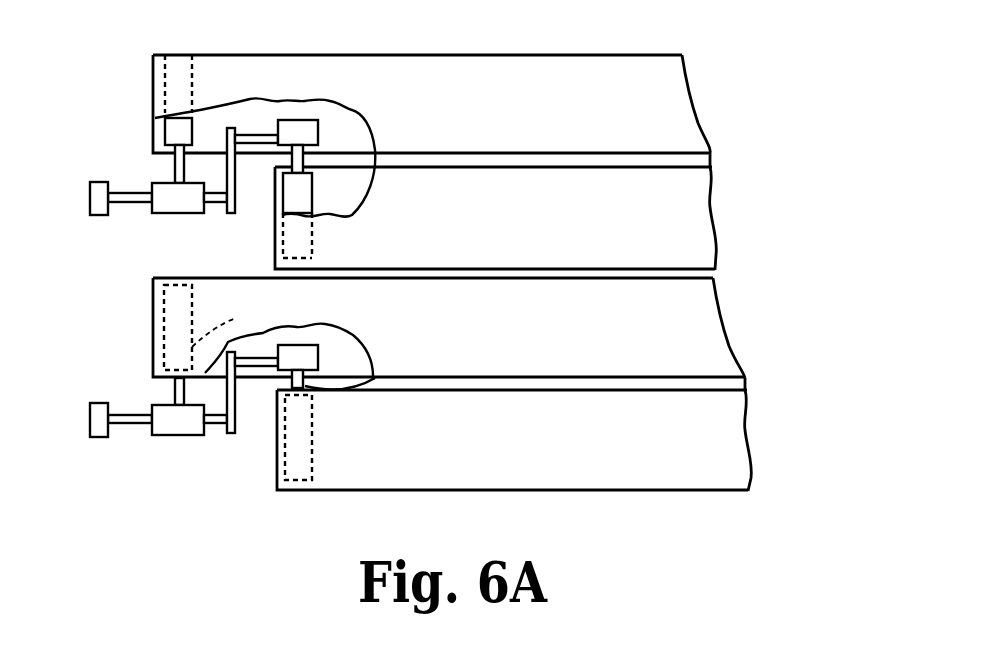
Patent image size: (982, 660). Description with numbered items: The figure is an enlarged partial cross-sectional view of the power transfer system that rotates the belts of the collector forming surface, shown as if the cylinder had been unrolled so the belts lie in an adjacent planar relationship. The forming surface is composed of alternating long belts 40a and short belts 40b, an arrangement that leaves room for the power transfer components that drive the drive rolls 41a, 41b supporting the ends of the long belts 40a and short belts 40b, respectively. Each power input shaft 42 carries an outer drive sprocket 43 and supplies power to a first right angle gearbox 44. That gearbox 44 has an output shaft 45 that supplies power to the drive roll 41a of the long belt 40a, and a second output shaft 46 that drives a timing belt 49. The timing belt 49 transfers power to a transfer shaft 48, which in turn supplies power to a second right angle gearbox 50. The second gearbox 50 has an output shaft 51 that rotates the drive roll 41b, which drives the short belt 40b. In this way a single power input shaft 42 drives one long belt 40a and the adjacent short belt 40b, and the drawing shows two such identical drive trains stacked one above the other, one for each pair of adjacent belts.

The long belt 40a is at (658, 98).
The short belt 40b is at (678, 207).
The drive roll 41a is at (213, 110).
The drive roll 41b is at (366, 202).
The power input shaft 42 is at (127, 202).
The outer drive sprocket 43 is at (90, 187).
The first right angle gearbox 44 is at (178, 202).
The output shaft 45 is at (177, 168).
The second output shaft 46 is at (215, 202).
The transfer shaft 48 is at (270, 132).
The timing belt 49 is at (232, 173).
The second right angle gearbox 50 is at (298, 130).
The output shaft 51 is at (303, 158).